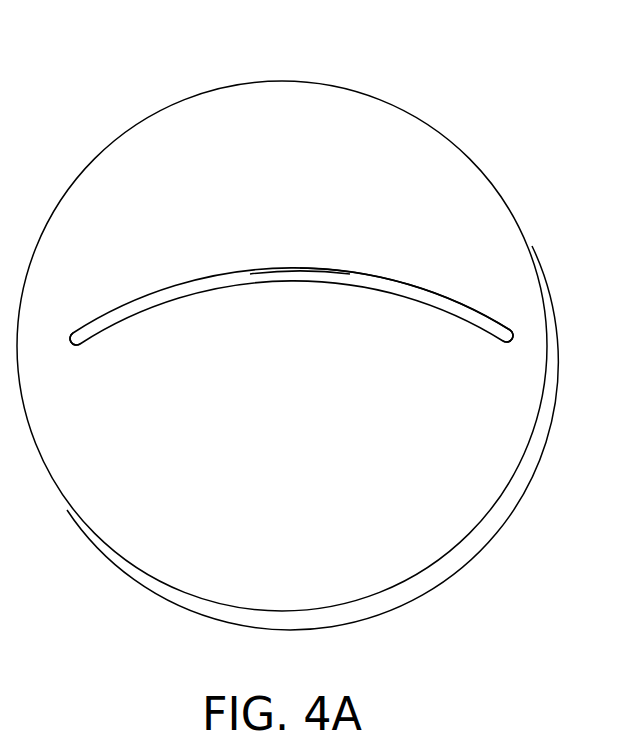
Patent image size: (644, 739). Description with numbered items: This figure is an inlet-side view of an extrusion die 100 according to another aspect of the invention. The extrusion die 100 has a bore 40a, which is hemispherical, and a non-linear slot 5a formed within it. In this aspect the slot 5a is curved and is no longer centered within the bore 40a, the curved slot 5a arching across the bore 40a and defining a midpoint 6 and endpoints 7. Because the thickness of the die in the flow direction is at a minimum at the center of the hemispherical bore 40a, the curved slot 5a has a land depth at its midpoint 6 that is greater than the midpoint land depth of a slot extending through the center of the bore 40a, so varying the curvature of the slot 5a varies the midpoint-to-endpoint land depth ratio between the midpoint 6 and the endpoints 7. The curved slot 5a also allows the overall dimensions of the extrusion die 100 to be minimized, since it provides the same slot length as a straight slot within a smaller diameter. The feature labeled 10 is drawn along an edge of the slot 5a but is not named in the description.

The extrusion die 100 is at (287, 325).
The bore 40a is at (268, 484).
The slot 5a is at (168, 305).
The edge of curved element 10 is at (428, 296).
The midpoint 6 is at (300, 266).
The endpoints 7 is at (73, 347).